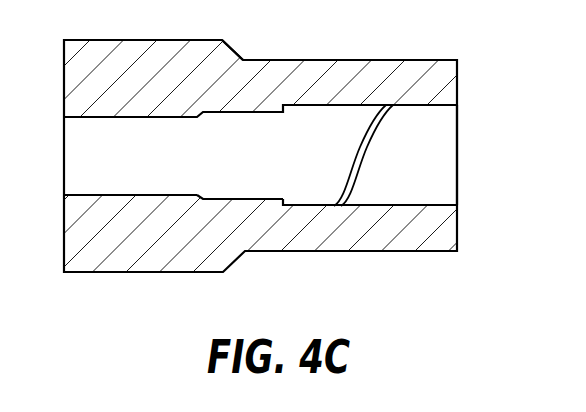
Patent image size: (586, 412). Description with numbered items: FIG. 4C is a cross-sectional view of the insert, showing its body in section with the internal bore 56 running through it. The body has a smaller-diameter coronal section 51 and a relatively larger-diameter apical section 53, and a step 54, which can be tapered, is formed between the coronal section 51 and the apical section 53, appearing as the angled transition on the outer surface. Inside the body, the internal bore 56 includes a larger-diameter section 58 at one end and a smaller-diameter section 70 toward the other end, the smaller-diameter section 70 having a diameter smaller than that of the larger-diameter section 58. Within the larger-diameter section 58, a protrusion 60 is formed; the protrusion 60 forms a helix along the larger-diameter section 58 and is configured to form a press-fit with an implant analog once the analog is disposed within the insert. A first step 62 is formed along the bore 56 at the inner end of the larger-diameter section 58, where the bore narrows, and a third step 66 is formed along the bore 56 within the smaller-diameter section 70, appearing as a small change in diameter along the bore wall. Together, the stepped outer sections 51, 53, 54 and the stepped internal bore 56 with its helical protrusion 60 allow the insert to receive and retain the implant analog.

The coronal section 51 is at (345, 75).
The apical section 53 is at (139, 53).
The step 54 is at (234, 50).
The internal bore 56 is at (452, 155).
The larger-diameter section 58 is at (435, 204).
The protrusion 60 is at (360, 152).
The first step 62 is at (297, 205).
The third step 66 is at (204, 196).
The smaller-diameter section 70 is at (80, 194).